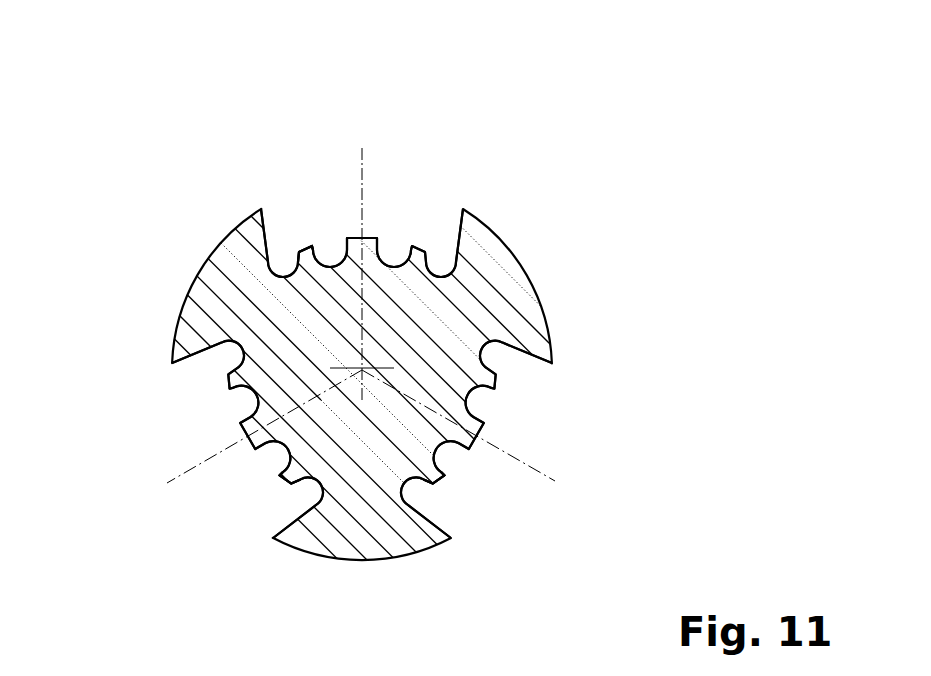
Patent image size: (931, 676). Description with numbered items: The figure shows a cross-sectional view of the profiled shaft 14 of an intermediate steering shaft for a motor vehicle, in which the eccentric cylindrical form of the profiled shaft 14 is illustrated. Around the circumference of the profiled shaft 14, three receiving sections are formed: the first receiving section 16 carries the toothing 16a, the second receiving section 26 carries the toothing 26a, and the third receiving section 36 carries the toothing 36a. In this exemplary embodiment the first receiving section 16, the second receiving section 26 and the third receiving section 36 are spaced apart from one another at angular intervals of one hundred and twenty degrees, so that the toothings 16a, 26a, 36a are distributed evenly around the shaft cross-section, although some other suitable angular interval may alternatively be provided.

The profiled shaft 14 is at (515, 287).
The second receiving section 26 is at (428, 177).
The toothing 26a is at (305, 248).
The third receiving section 36 is at (160, 409).
The toothing 36a is at (282, 477).
The first receiving section 16 is at (565, 409).
The toothing 16a is at (446, 478).